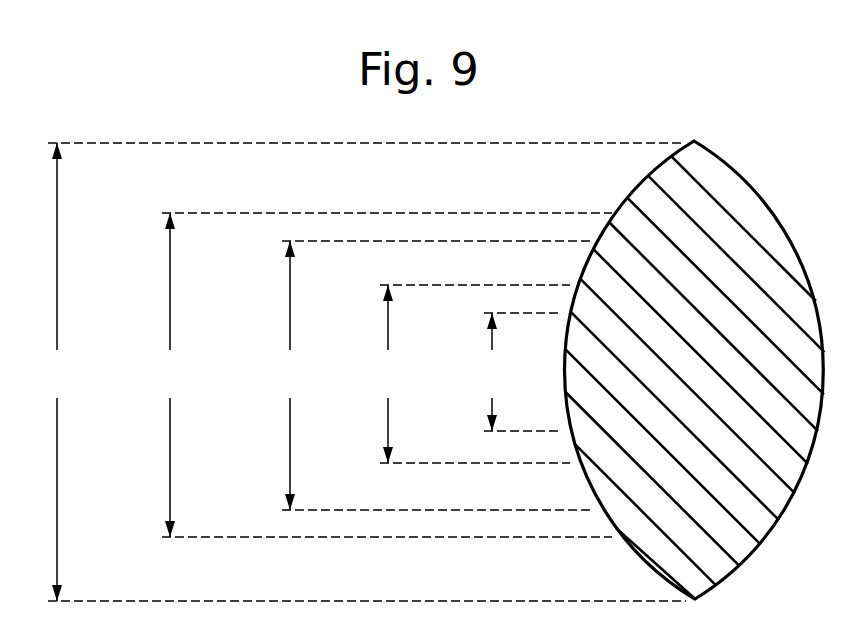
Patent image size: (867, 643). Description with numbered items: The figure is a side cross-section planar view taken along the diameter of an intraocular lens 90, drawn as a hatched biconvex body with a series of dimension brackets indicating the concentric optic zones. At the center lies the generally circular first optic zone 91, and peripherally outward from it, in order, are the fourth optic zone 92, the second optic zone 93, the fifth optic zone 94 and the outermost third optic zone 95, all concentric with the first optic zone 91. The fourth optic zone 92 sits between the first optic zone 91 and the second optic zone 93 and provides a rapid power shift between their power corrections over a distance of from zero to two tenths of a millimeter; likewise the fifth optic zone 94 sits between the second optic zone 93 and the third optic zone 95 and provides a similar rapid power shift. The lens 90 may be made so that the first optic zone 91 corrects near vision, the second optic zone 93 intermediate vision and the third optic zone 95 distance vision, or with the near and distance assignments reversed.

The intraocular lens 90 is at (692, 82).
The first optic zone 91 is at (511, 372).
The fourth optic zone 92 is at (465, 374).
The second optic zone 93 is at (427, 375).
The fifth optic zone 94 is at (377, 375).
The third optic zone 95 is at (358, 372).